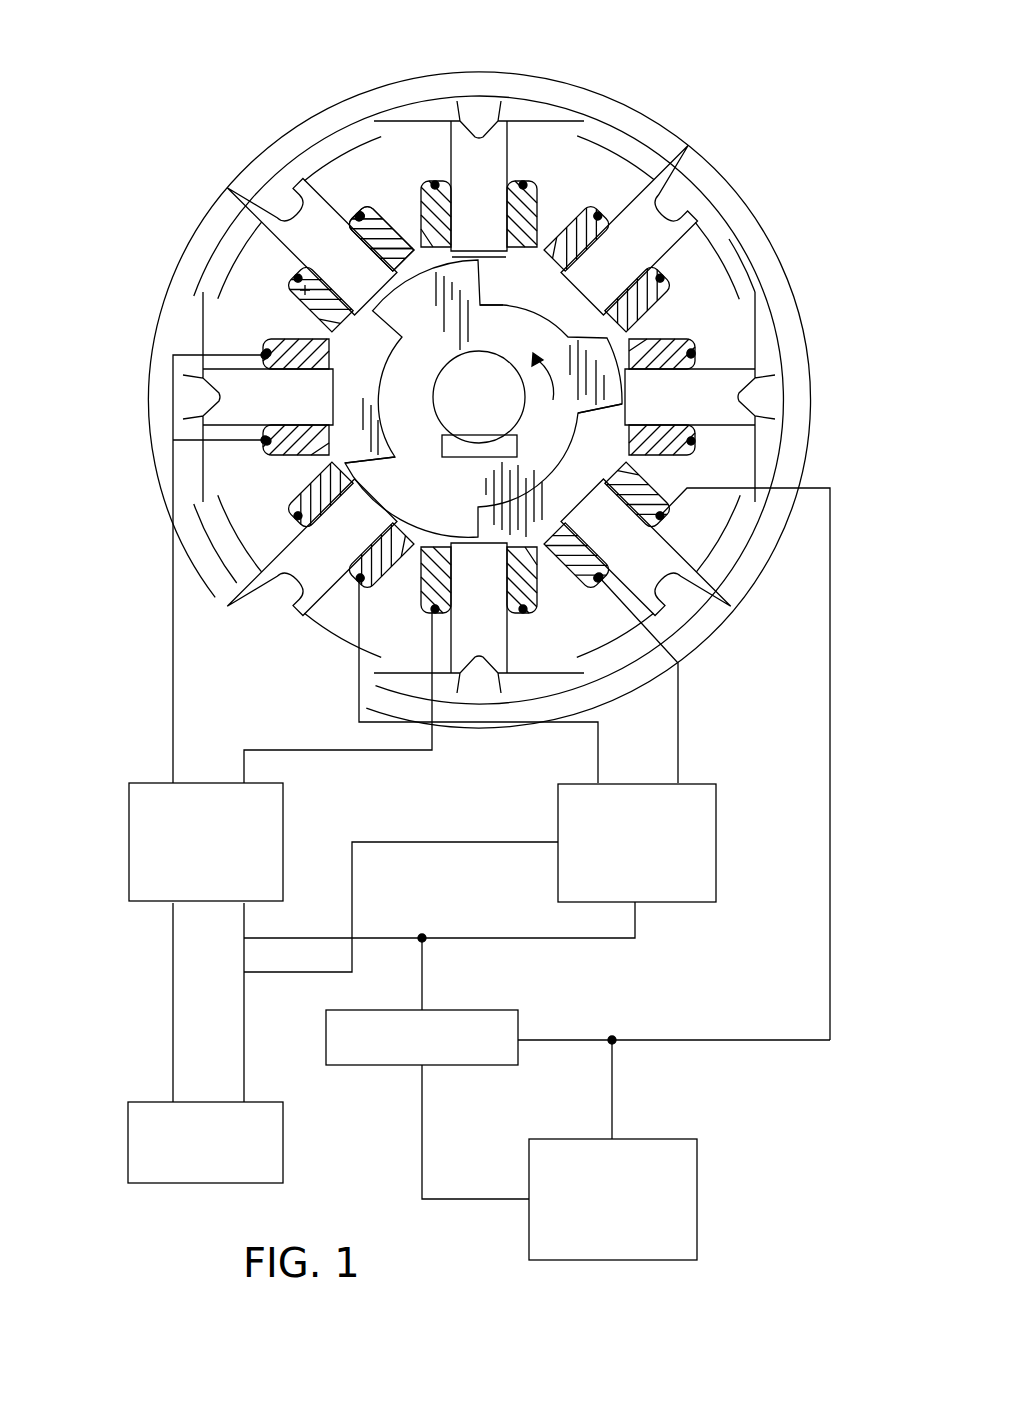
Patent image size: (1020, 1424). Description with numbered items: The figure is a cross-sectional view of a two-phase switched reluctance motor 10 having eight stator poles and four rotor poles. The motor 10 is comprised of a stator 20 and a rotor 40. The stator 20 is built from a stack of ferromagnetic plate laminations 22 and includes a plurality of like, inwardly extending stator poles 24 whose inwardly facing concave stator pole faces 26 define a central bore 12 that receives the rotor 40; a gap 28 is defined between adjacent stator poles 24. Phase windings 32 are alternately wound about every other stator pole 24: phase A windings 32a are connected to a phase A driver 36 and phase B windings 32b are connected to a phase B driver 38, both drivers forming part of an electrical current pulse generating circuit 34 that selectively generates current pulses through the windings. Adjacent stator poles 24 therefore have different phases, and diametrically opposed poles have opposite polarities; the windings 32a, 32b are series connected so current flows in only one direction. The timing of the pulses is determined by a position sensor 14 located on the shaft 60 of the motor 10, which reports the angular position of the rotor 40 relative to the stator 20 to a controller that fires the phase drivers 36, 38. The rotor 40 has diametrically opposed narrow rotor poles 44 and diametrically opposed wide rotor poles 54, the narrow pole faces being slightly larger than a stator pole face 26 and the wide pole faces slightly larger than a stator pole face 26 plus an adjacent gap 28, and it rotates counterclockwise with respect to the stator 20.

The two-phase switched reluctance motor 10 is at (188, 130).
The central bore 12 is at (420, 513).
The position sensor 14 is at (463, 450).
The stator 20 is at (575, 130).
The plate laminations 22 is at (593, 150).
The stator poles 24 is at (633, 215).
The stator pole faces 26 is at (533, 312).
The gap 28 is at (385, 300).
The phase windings 32 is at (312, 300).
The phase A windings 32a is at (293, 447).
The phase B windings 32b is at (647, 297).
The electrical current pulse generating circuit 34 is at (750, 1085).
The phase A driver 36 is at (128, 818).
The phase B driver 38 is at (716, 795).
The rotor 40 is at (468, 255).
The narrow rotor poles 44 is at (357, 450).
The wide rotor poles 54 is at (355, 217).
The shaft 60 is at (472, 377).